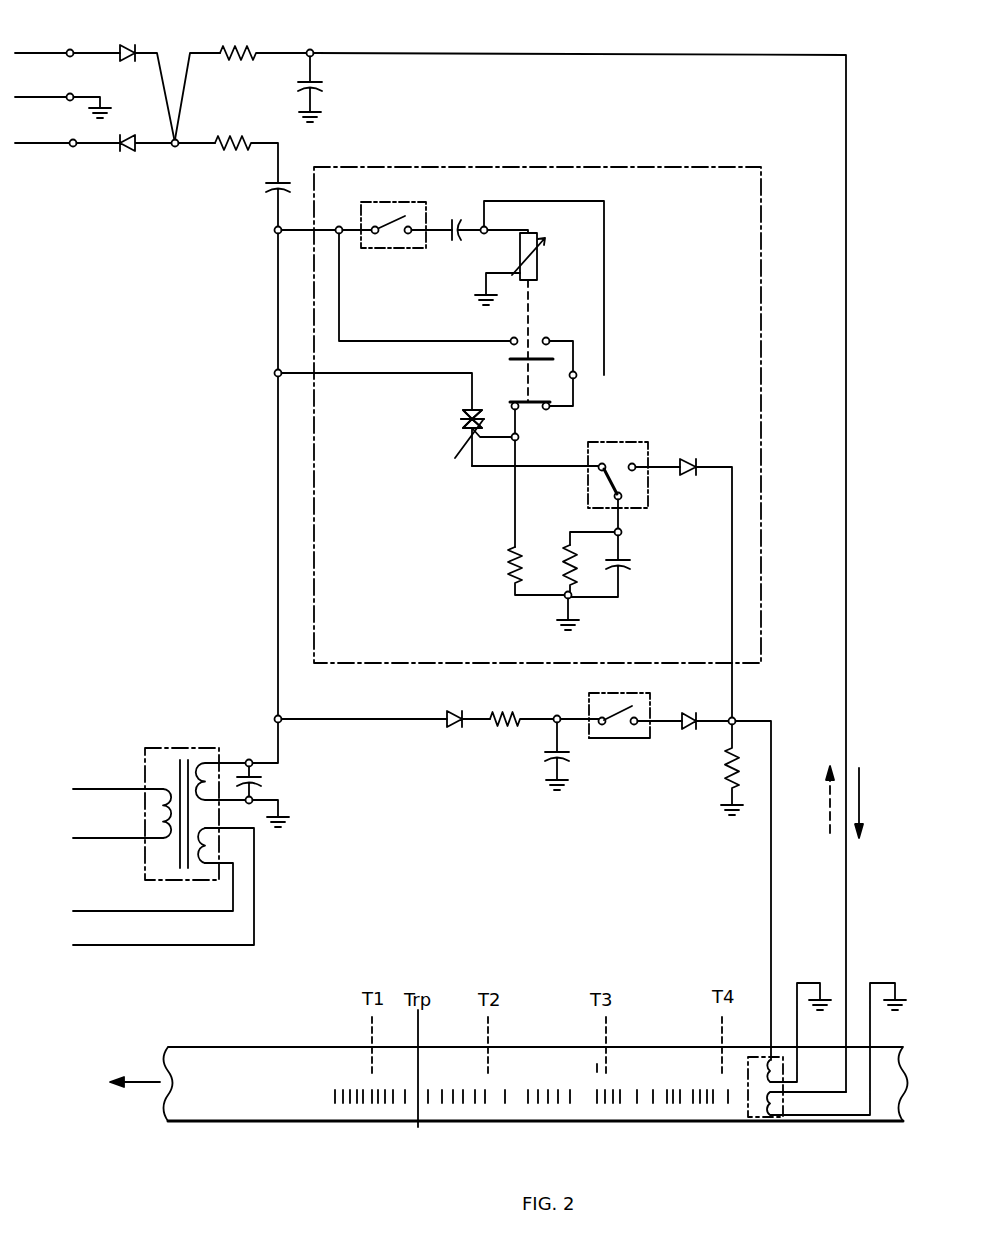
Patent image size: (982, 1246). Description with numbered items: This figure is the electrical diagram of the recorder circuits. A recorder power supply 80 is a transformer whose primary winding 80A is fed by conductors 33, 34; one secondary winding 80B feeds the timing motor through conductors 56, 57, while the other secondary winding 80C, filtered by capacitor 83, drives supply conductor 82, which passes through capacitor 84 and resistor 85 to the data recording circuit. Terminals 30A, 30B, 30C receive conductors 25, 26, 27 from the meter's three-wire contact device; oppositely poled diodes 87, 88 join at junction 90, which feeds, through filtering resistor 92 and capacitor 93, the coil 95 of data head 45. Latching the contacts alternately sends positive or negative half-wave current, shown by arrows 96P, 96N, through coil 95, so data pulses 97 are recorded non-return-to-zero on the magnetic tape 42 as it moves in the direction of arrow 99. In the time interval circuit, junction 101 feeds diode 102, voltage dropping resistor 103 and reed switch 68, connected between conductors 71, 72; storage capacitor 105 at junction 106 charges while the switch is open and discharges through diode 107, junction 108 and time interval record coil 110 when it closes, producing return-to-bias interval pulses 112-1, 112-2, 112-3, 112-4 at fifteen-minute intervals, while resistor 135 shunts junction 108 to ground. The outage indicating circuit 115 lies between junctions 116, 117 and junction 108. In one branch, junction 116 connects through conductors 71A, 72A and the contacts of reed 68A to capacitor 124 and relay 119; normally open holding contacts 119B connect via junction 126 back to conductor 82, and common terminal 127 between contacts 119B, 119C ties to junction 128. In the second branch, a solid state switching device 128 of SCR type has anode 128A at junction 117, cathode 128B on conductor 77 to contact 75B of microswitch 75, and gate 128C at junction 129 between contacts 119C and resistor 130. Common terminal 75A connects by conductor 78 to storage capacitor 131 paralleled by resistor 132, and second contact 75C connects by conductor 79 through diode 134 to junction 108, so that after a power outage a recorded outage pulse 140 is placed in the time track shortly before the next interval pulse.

The conductor 25 is at (45, 53).
The conductor 26 is at (33, 96).
The conductor 27 is at (40, 142).
The terminal 30A is at (73, 50).
The terminal 30B is at (68, 93).
The terminal 30C is at (72, 147).
The diode 87 is at (129, 44).
The diode 88 is at (126, 152).
The junction 90 is at (173, 147).
The resistor 85 is at (240, 152).
The resistor 92 is at (235, 45).
The capacitor 93 is at (323, 89).
The capacitor 84 is at (268, 185).
The junction 116 is at (275, 233).
The junction 117 is at (275, 374).
The supply conductor 82 is at (277, 515).
The power outage indicating recording circuit portion 115 is at (636, 166).
The circuit junction 126 is at (339, 226).
The reed contacts 68A is at (378, 202).
The conductor 71A is at (372, 234).
The conductor 72A is at (438, 233).
The capacitor 124 is at (455, 220).
The solid state switching device 128 is at (486, 228).
The relay 119 is at (540, 255).
The relay contacts 119B is at (543, 338).
The relay contacts 119C is at (527, 408).
The common terminal 127 is at (577, 377).
The anode 128A is at (463, 408).
The cathode 128B is at (462, 425).
The gate 128C is at (455, 458).
The circuit junction 129 is at (513, 442).
The conductor 77 is at (560, 469).
The microswitch 75 is at (636, 442).
The common terminal 75A is at (614, 498).
The contact 75B is at (602, 462).
The second contact terminal 75C is at (636, 465).
The diode 134 is at (694, 460).
The conductor 79 is at (668, 470).
The conductor 78 is at (621, 530).
The resistor 130 is at (508, 570).
The resistor 132 is at (563, 555).
The storage capacitor 131 is at (630, 570).
The junction 101 is at (282, 716).
The diode 102 is at (447, 715).
The voltage dropping resistor 103 is at (492, 712).
The storage capacitor 105 is at (550, 758).
The junction 106 is at (555, 716).
The conductor 71 is at (587, 703).
The reed switch 68 is at (615, 738).
The conductor 72 is at (660, 718).
The diode 107 is at (694, 712).
The circuit junction 108 is at (735, 720).
The resistor 135 is at (722, 770).
The directional arrow 96N is at (825, 803).
The directional arrow 96P is at (862, 800).
The recorder power supply 80 is at (195, 748).
The primary winding 80A is at (158, 850).
The secondary winding 80B is at (200, 862).
The secondary winding 80C is at (210, 763).
The filter capacitor 83 is at (260, 783).
The conductor 33 is at (100, 789).
The conductor 34 is at (95, 838).
The conductor 56 is at (80, 911).
The conductor 57 is at (75, 945).
The directional arrow 99 is at (142, 1080).
The magnetic tape 42 is at (283, 1120).
The data pulses 97 is at (397, 1105).
The time interval pulse 112-1 is at (370, 1070).
The time interval pulse 112-2 is at (486, 1070).
The time interval pulse 112-3 is at (610, 1070).
The time interval pulse 112-4 is at (720, 1073).
The recorded power outage pulse 140 is at (598, 1070).
The time interval magnetic record coil 110 is at (756, 1060).
The coil 95 is at (757, 1117).
The head 45 is at (780, 1120).